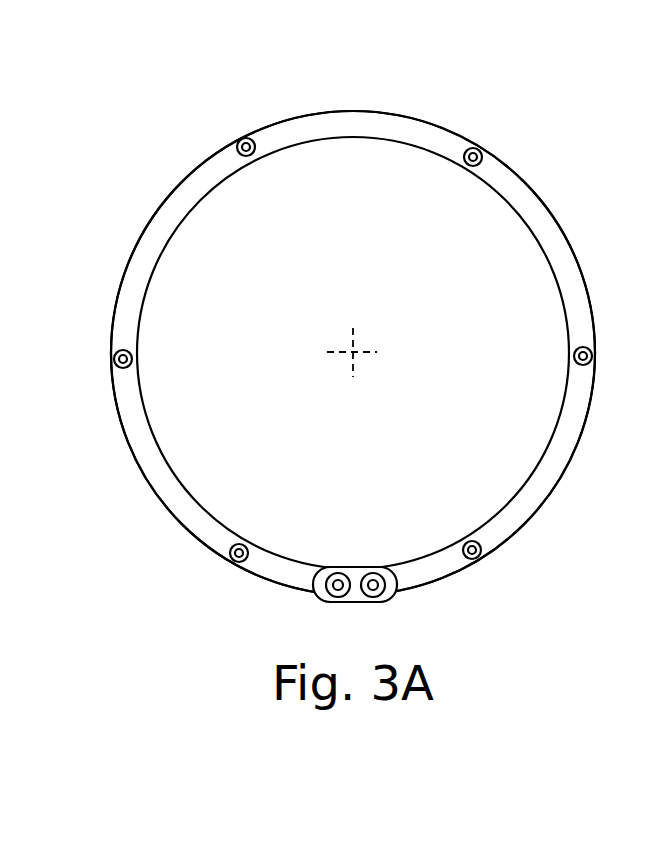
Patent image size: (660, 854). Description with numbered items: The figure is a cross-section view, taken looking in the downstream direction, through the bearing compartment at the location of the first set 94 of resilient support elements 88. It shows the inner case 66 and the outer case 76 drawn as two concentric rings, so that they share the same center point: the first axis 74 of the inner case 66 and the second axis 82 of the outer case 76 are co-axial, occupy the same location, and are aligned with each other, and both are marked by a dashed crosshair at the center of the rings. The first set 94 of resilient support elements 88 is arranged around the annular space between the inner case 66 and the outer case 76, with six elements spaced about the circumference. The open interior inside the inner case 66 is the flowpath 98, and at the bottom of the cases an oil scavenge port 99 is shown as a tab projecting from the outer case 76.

The first set of resilient support elements 94 is at (352, 316).
The outer case 76 is at (163, 198).
The inner case 66 is at (207, 190).
The first axis 74 is at (385, 321).
The second axis 82 is at (353, 352).
The resilient support elements 88 is at (255, 147).
The flowpath 98 is at (493, 424).
The oil scavenge port 99 is at (352, 565).